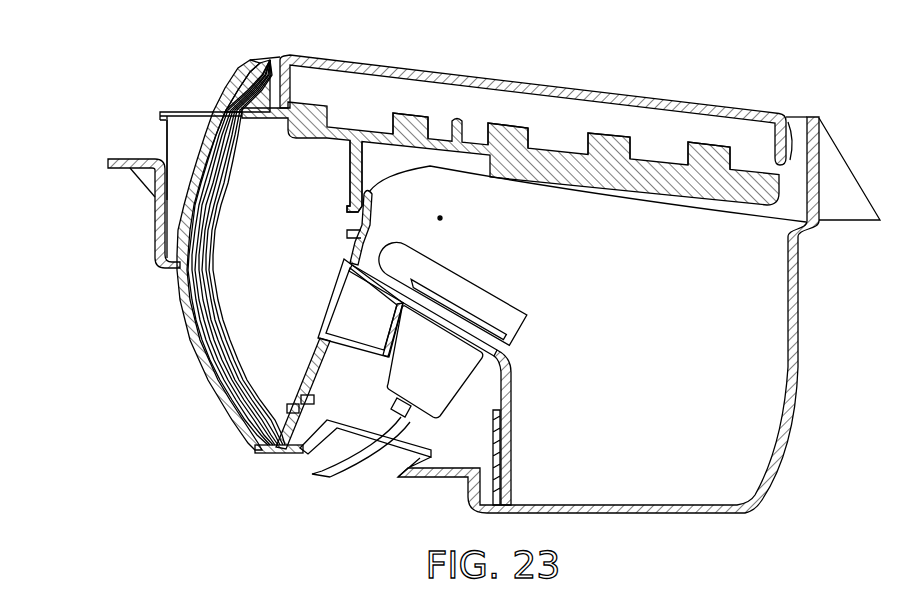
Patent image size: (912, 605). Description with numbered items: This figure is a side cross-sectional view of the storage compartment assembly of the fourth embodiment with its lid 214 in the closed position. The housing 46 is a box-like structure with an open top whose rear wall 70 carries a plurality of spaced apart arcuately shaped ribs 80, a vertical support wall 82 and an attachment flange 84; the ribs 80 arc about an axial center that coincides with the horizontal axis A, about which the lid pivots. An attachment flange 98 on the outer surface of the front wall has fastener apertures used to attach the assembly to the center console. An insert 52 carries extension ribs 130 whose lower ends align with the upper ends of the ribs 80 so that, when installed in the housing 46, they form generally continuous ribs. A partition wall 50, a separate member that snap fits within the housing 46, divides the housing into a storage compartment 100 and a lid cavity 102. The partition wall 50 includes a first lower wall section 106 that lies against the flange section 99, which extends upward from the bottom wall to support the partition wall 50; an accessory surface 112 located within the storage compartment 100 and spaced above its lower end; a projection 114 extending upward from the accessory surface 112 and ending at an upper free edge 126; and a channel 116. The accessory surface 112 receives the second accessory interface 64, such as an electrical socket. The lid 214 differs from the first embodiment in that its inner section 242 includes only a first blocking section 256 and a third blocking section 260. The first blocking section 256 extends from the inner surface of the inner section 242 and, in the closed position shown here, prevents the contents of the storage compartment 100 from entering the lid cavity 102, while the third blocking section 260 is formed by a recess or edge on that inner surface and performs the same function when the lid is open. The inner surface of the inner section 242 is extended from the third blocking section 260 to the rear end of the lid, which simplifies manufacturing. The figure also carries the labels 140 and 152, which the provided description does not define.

The housing 46 is at (794, 393).
The attachment flange 98 is at (838, 194).
The lid 214 is at (712, 55).
The cover panel 140 is at (742, 108).
The third blocking section 260 is at (510, 138).
The inner section 242 is at (617, 140).
The first blocking section 256 is at (346, 211).
The upper free edge 126 is at (385, 187).
The projection 114 is at (349, 236).
The rear wall 70 is at (178, 327).
The lens cap region 152 is at (247, 110).
The ribs 80 is at (237, 252).
The extension ribs 130 is at (220, 177).
The insert 52 is at (190, 128).
The attachment flange 84 is at (123, 159).
The vertical support wall 82 is at (168, 186).
The lid cavity 102 is at (250, 302).
The storage compartment 100 is at (633, 366).
The partition wall 50 is at (466, 360).
The accessory surface 112 is at (366, 263).
The first lower wall section 106 is at (512, 437).
The flange section 99 is at (494, 439).
The second accessory interface 64 is at (490, 318).
The channel 116 is at (404, 311).
The axis A is at (440, 220).